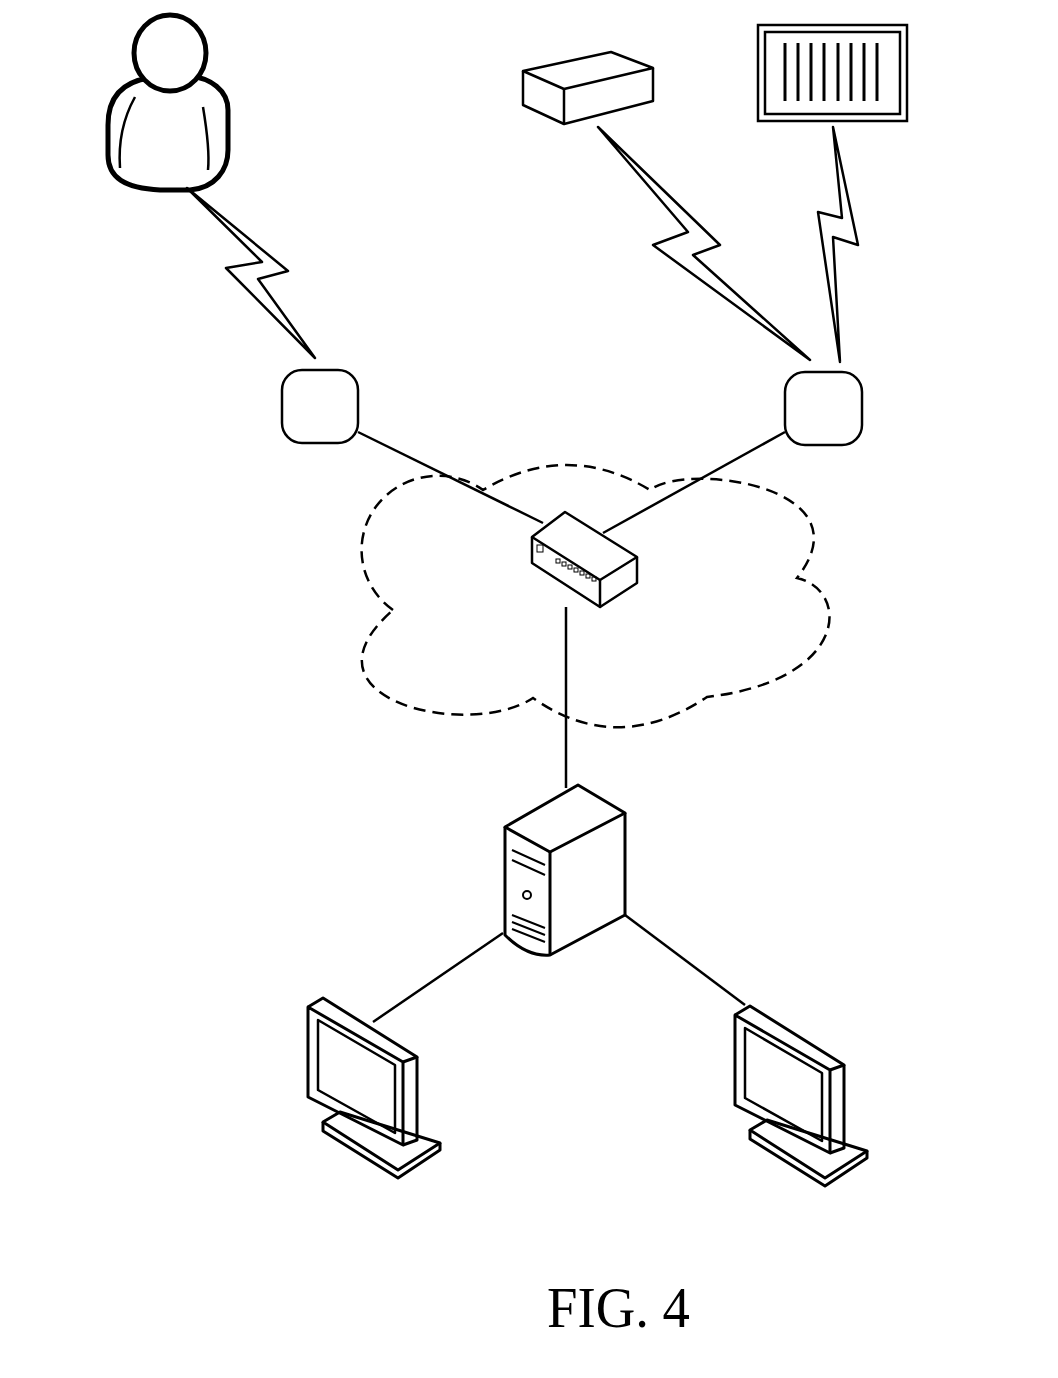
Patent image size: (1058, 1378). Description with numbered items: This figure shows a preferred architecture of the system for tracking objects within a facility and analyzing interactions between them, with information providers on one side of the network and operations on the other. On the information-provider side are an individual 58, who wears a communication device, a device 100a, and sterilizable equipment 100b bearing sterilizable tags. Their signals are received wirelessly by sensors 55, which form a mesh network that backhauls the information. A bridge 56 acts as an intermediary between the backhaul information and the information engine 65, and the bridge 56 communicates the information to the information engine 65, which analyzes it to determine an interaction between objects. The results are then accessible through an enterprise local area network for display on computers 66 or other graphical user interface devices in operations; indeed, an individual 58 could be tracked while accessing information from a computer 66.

The individual 58 is at (112, 107).
The device 100a is at (522, 76).
The sterilizable equipment 100b is at (758, 51).
The sensor 55 is at (572, 407).
The bridge 56 is at (637, 577).
The information engine 65 is at (625, 845).
The computer 66 is at (417, 1103).